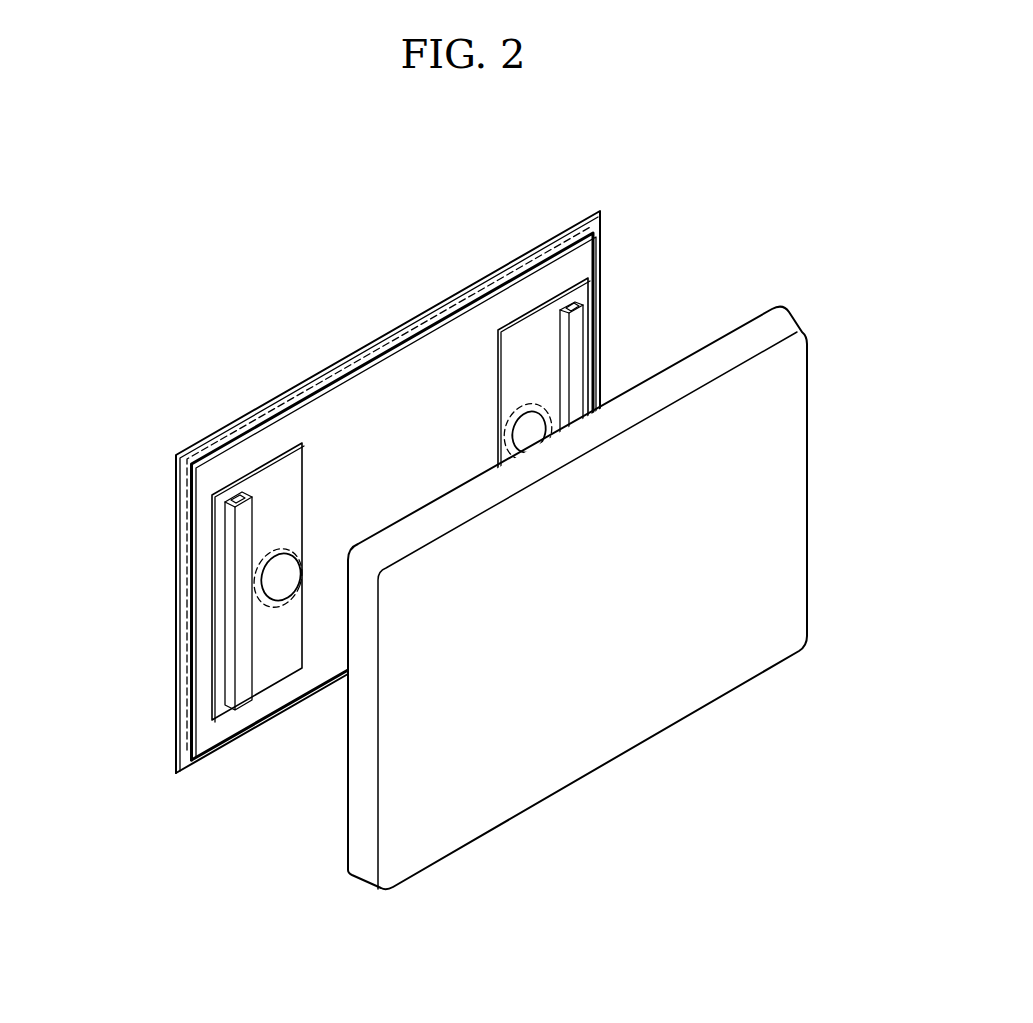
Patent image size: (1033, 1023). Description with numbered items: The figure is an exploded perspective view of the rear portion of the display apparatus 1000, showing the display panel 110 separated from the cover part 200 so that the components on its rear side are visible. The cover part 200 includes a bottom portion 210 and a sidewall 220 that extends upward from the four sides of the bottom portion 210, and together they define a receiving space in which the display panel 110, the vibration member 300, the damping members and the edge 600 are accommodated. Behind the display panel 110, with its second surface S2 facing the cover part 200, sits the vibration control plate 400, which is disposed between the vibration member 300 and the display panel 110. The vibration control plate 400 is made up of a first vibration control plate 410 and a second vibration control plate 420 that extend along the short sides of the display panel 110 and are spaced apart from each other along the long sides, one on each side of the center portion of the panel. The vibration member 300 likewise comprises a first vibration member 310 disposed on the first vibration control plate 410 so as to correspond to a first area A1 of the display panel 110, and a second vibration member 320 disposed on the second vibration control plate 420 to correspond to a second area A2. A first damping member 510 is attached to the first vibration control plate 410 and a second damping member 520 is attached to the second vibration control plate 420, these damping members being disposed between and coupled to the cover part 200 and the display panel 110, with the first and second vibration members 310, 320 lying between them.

The display apparatus 1000 is at (709, 215).
The display panel 110 is at (232, 447).
The edge 600 is at (272, 412).
The second surface S2 is at (568, 277).
The vibration control plate 400 is at (437, 234).
The first vibration control plate 410 is at (301, 445).
The second vibration control plate 420 is at (498, 331).
The first damping member 510 is at (227, 648).
The second damping member 520 is at (582, 330).
The vibration member 300 is at (100, 520).
The first vibration member 310 is at (272, 581).
The second vibration member 320 is at (517, 437).
The first area A1 is at (278, 608).
The second area A2 is at (543, 406).
The cover part 200 is at (278, 790).
The bottom portion 210 is at (400, 783).
The sidewall 220 is at (357, 849).